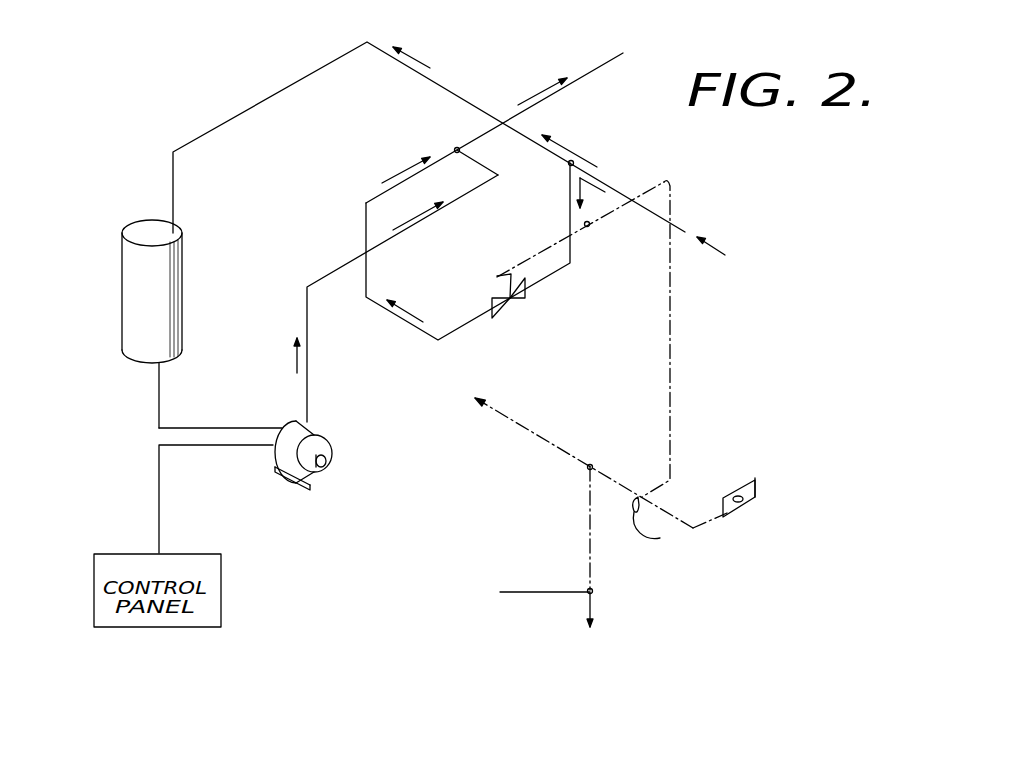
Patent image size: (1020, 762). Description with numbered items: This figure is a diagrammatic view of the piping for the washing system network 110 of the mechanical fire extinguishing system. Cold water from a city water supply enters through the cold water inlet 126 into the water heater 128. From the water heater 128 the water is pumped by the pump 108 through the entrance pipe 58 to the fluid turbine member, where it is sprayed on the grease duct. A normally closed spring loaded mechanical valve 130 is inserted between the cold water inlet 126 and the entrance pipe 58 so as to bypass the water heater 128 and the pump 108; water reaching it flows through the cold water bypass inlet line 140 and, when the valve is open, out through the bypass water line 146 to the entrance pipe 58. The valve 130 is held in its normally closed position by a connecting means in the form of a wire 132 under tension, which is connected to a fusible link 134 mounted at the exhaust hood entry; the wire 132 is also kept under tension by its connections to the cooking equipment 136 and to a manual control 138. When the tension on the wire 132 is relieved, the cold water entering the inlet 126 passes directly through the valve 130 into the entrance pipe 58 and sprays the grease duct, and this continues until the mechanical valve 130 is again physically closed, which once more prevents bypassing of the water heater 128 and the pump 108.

The entrance pipe 58 is at (593, 70).
The pump 108 is at (333, 453).
The washing system network 110 is at (700, 345).
The cold water inlet 126 is at (615, 192).
The water heater 128 is at (127, 286).
The mechanical valve 130 is at (520, 303).
The wire 132 is at (510, 263).
The fusible link 134 is at (740, 512).
The cooking equipment 136 is at (528, 593).
The manual control 138 is at (553, 447).
The cold water bypass inlet line 140 is at (572, 252).
The bypass water line 146 is at (405, 322).